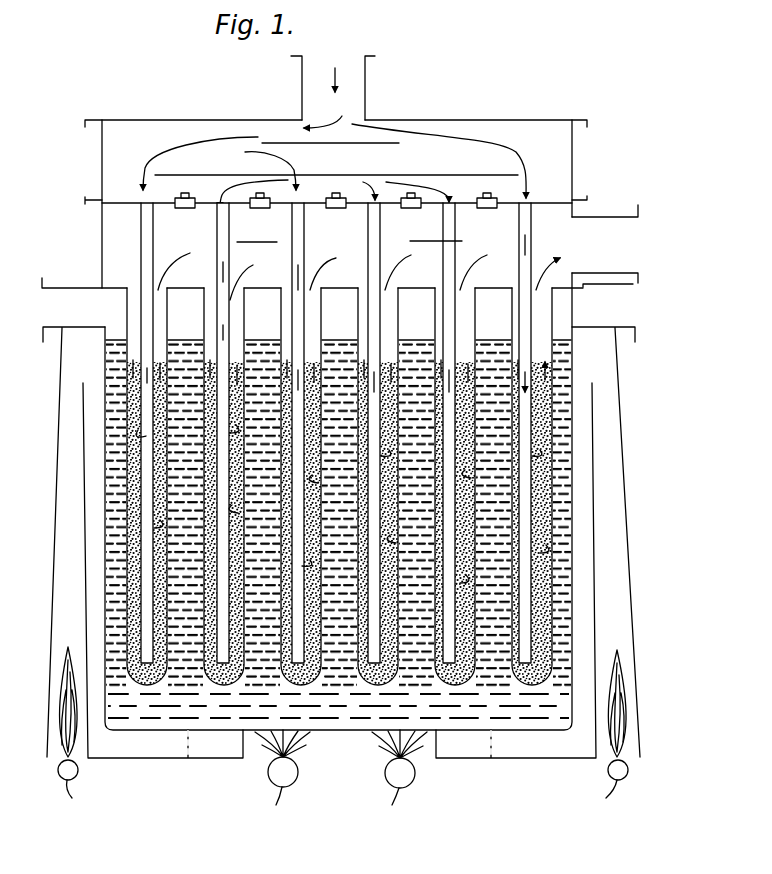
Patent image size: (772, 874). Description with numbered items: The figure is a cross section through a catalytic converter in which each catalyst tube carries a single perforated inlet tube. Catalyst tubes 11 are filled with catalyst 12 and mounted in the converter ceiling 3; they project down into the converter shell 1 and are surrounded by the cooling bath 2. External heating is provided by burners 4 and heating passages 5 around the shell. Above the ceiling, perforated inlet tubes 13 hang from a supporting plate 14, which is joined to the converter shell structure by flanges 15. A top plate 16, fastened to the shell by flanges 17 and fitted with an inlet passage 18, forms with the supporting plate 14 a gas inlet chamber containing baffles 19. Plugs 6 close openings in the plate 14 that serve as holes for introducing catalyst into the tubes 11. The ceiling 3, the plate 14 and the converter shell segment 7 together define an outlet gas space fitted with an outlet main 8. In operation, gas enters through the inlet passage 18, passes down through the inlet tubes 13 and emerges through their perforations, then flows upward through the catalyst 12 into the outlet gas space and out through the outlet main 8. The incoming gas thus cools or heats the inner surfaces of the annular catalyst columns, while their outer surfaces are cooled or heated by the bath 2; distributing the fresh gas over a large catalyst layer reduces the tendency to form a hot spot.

The converter shell 1 is at (337, 733).
The cooling bath 2 is at (513, 710).
The converter ceiling 3 is at (113, 287).
The burners 4 is at (67, 780).
The heating passages 5 is at (617, 500).
The plugs 6 is at (183, 209).
The converter shell segment 7 is at (102, 247).
The outlet main 8 is at (622, 268).
The catalyst tubes 11 is at (104, 358).
The catalyst 12 is at (137, 528).
The perforated inlet tubes 13 is at (533, 238).
The supporting plate 14 is at (562, 209).
The flanges 15 is at (578, 200).
The top plate 16 is at (489, 118).
The flanges 17 is at (578, 118).
The inlet passage 18 is at (348, 63).
The baffles 19 is at (225, 172).